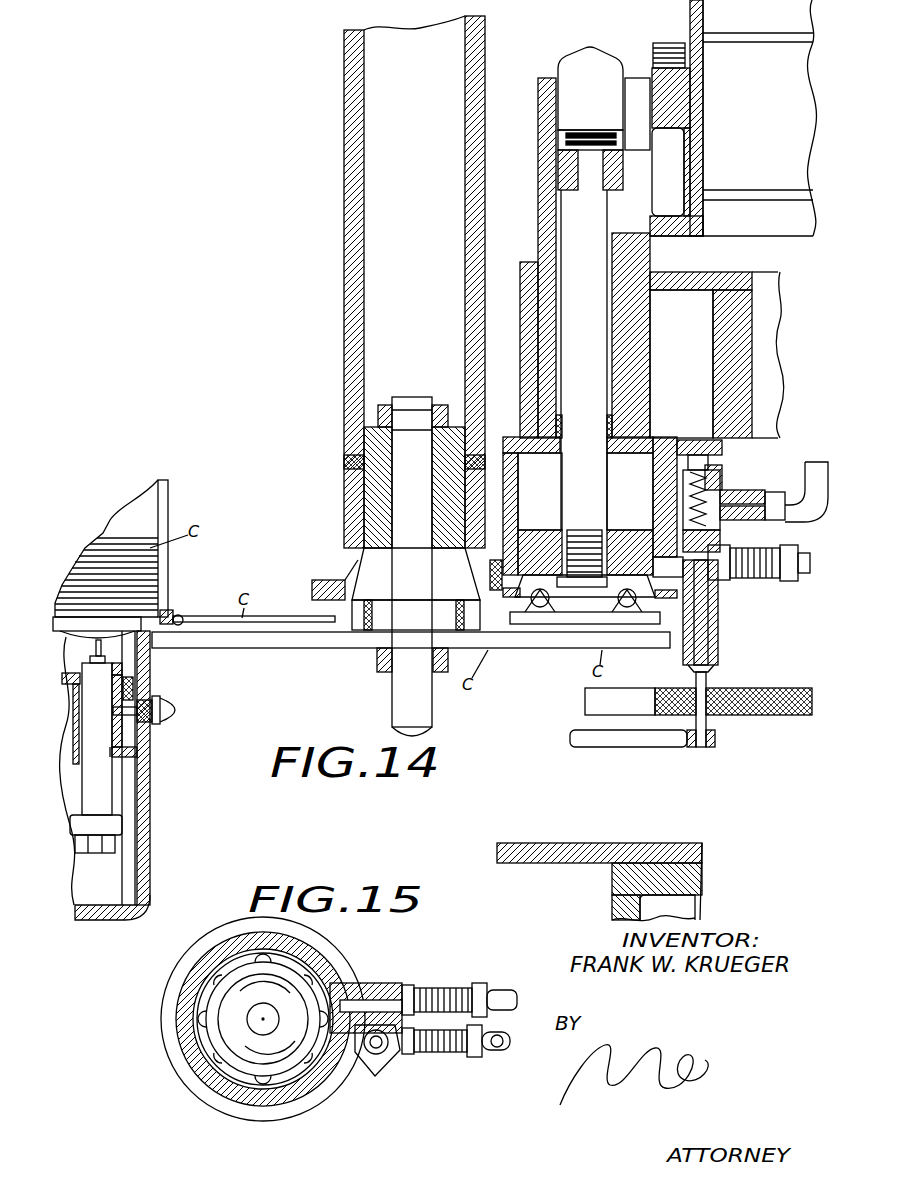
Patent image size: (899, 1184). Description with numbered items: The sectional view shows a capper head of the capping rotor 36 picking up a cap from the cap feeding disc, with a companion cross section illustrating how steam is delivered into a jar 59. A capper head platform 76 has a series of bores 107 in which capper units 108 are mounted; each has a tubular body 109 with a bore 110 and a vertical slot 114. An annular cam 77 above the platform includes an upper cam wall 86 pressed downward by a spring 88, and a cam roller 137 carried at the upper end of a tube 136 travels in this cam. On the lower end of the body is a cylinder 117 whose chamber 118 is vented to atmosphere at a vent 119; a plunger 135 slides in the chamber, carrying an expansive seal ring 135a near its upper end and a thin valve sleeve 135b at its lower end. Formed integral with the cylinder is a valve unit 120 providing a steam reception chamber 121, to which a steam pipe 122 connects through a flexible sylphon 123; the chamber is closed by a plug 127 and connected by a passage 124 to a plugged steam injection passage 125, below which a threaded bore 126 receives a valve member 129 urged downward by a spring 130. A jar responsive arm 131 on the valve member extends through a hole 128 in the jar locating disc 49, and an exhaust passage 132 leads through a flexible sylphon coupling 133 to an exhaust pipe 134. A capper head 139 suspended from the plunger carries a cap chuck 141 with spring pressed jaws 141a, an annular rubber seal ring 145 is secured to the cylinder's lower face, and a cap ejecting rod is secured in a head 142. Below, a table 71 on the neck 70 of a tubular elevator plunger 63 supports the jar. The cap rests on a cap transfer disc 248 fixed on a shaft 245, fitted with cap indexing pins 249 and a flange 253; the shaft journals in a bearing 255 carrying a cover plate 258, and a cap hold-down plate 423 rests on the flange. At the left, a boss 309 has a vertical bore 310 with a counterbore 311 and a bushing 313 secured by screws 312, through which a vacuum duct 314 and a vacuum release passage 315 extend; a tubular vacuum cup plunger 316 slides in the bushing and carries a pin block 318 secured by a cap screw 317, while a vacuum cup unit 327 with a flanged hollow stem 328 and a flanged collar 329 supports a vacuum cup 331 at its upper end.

In FIG. 14, the capping rotor 36 is at (504, 288).
In FIG. 14, the head 142 is at (568, 65).
In FIG. 14, the vertical slot 114 is at (635, 85).
In FIG. 14, the spring 88 is at (670, 43).
In FIG. 14, the upper cam wall 86 is at (700, 98).
In FIG. 14, the cam roller 137 is at (670, 152).
In FIG. 14, the annular cam 77 is at (698, 237).
In FIG. 14, the capper head platform 76 is at (788, 290).
In FIG. 14, the tube 136 is at (580, 258).
In FIG. 14, the bore 110 is at (565, 333).
In FIG. 14, the bores 107 is at (632, 352).
In FIG. 14, the tubular body 109 is at (545, 387).
In FIG. 14, the cylinder 117 is at (508, 437).
In FIG. 15, the cylinder 117 is at (193, 1078).
In FIG. 14, the chamber 118 is at (660, 438).
In FIG. 15, the chamber 118 is at (196, 1034).
In FIG. 14, the plug 127 is at (690, 455).
In FIG. 14, the valve unit 120 is at (738, 475).
In FIG. 14, the capper units 108 is at (722, 475).
In FIG. 14, the steam pipe 122 is at (812, 462).
In FIG. 15, the steam pipe 122 is at (500, 1055).
In FIG. 14, the steam reception chamber 121 is at (718, 490).
In FIG. 14, the flexible sylphon 123 is at (772, 495).
In FIG. 15, the flexible sylphon 123 is at (446, 1055).
In FIG. 14, the vent 119 is at (525, 457).
In FIG. 14, the plunger 135 is at (577, 528).
In FIG. 14, the expansive seal ring 135a is at (548, 533).
In FIG. 14, the thin valve sleeve 135b is at (518, 600).
In FIG. 14, the spring 130 is at (675, 500).
In FIG. 14, the plugged steam injection passage 125 is at (672, 560).
In FIG. 15, the plugged steam injection passage 125 is at (335, 1044).
In FIG. 14, the exhaust pipe 134 is at (805, 565).
In FIG. 15, the exhaust pipe 134 is at (503, 993).
In FIG. 14, the passage 124 is at (714, 556).
In FIG. 14, the flexible sylphon coupling 133 is at (775, 570).
In FIG. 15, the flexible sylphon coupling 133 is at (443, 990).
In FIG. 14, the bearing 255 is at (362, 500).
In FIG. 14, the cover plate 258 is at (322, 580).
In FIG. 14, the flange 253 is at (350, 614).
In FIG. 14, the cap hold-down plate 423 is at (232, 618).
In FIG. 14, the vacuum cup 331 is at (95, 628).
In FIG. 14, the vacuum cup unit 327 is at (103, 632).
In FIG. 14, the flanged hollow stem 328 is at (95, 651).
In FIG. 14, the counterbore 311 is at (152, 658).
In FIG. 14, the screws 312 is at (133, 690).
In FIG. 14, the flanged collar 329 is at (113, 678).
In FIG. 14, the vacuum duct 314 is at (150, 722).
In FIG. 14, the vacuum release passage 315 is at (110, 756).
In FIG. 14, the vertical bore 310 is at (140, 760).
In FIG. 14, the bushing 313 is at (72, 795).
In FIG. 14, the pin block 318 is at (96, 825).
In FIG. 14, the boss 309 is at (105, 802).
In FIG. 14, the tubular vacuum cup plunger 316 is at (138, 840).
In FIG. 14, the cap screw 317 is at (105, 855).
In FIG. 14, the cap transfer disc 248 is at (307, 650).
In FIG. 14, the cap indexing pins 249 is at (376, 666).
In FIG. 14, the shaft 245 is at (432, 708).
In FIG. 14, the cap chuck 141 is at (542, 621).
In FIG. 14, the capper head 139 is at (570, 615).
In FIG. 14, the spring pressed jaws 141a is at (628, 624).
In FIG. 14, the annular rubber seal ring 145 is at (668, 600).
In FIG. 14, the threaded bore 126 is at (706, 620).
In FIG. 14, the valve member 129 is at (716, 640).
In FIG. 14, the holes 128 is at (705, 690).
In FIG. 14, the jar locating disc 49 is at (790, 690).
In FIG. 14, the jar responsive arm 131 is at (660, 748).
In FIG. 14, the table 71 is at (642, 843).
In FIG. 14, the tubular elevator plunger 63 is at (718, 888).
In FIG. 14, the neck 70 is at (612, 910).
In FIG. 15, the jar 59 is at (225, 1000).
In FIG. 15, the exhaust passage 132 is at (372, 1003).